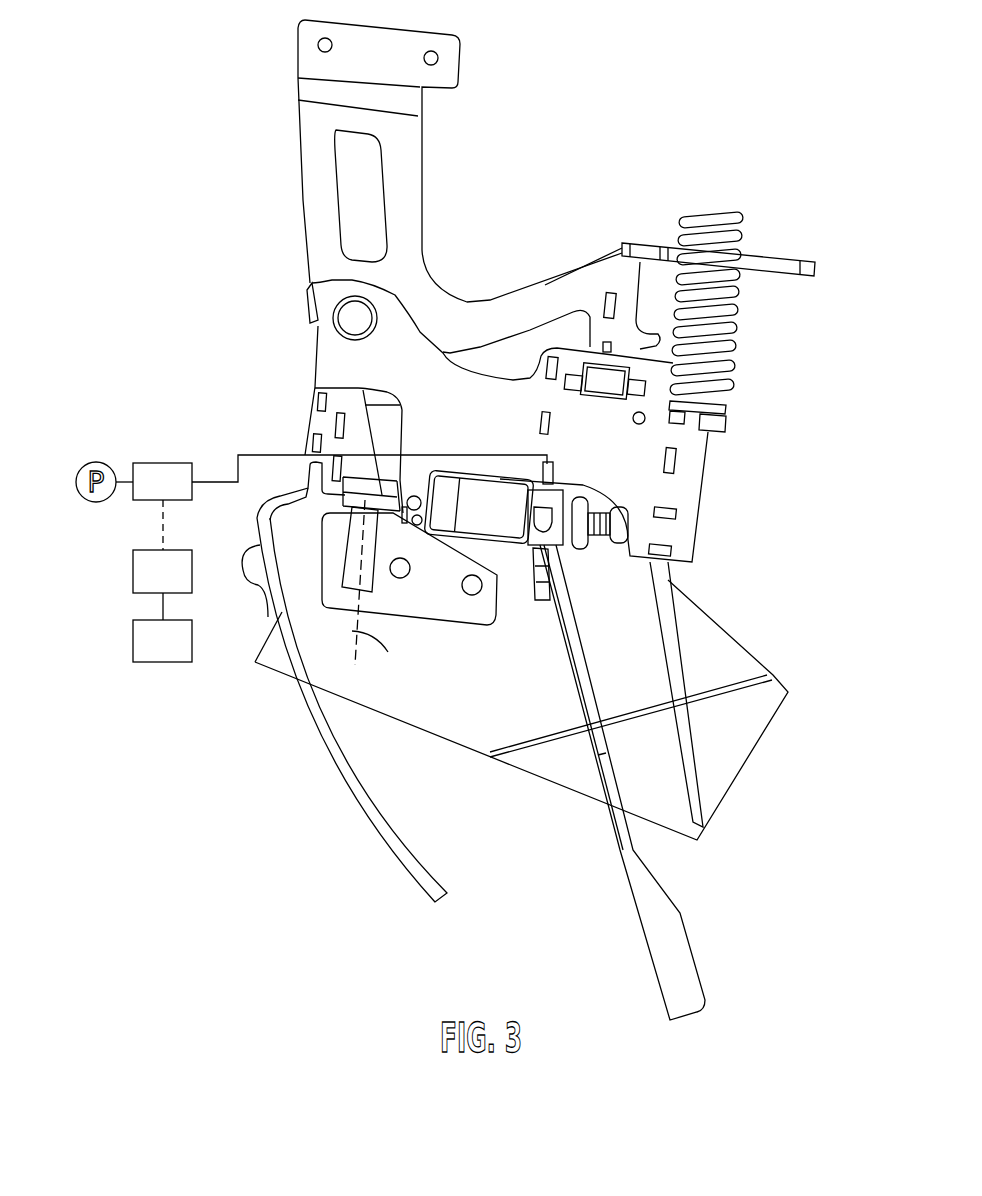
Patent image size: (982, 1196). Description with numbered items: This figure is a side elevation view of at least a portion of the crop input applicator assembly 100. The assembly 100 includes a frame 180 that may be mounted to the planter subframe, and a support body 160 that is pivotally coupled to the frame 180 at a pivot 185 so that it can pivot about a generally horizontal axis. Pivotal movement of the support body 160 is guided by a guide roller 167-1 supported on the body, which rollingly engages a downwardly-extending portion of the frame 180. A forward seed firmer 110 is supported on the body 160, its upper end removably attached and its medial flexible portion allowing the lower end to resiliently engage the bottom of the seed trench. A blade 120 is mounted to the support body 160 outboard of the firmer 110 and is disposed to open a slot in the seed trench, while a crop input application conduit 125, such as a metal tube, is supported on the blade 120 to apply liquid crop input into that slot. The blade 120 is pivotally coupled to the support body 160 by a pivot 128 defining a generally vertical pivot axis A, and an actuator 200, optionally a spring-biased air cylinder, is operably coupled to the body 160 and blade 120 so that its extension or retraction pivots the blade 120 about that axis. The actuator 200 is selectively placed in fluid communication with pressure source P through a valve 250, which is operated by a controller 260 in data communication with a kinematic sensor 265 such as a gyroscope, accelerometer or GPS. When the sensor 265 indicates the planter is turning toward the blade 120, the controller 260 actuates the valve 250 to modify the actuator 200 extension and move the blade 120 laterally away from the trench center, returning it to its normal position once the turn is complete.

The crop input applicator assembly 100 is at (712, 77).
The forward seed firmer 110 is at (366, 820).
The blade 120 is at (728, 660).
The crop input application conduit 125 is at (700, 790).
The pivot 128 is at (275, 535).
The support body 160 is at (708, 495).
The guide roller 167-1 is at (596, 383).
The frame 180 is at (422, 180).
The pivot 185 is at (350, 318).
The actuator 200 is at (490, 520).
The valve 250 is at (340, 477).
The controller 260 is at (162, 571).
The kinematic sensor 265 is at (162, 641).